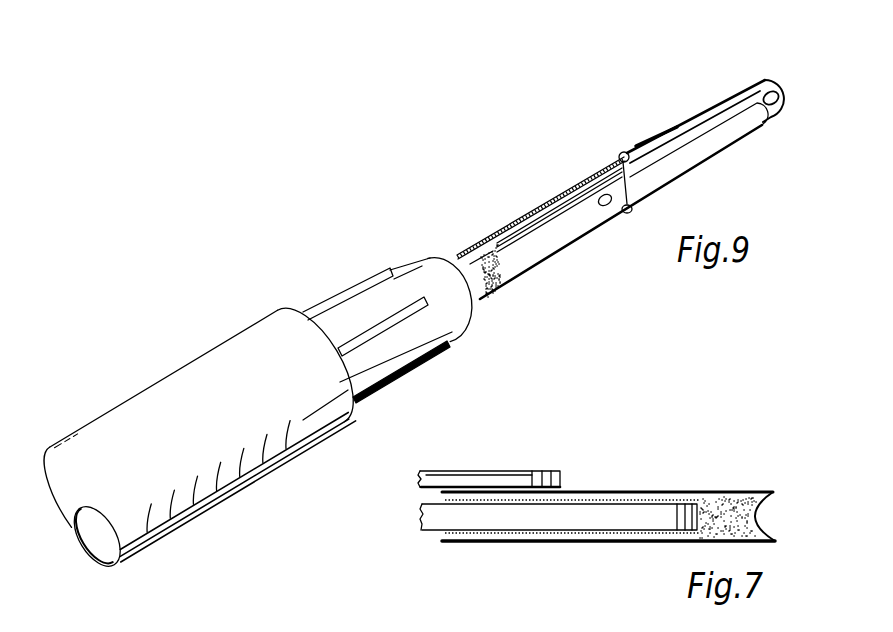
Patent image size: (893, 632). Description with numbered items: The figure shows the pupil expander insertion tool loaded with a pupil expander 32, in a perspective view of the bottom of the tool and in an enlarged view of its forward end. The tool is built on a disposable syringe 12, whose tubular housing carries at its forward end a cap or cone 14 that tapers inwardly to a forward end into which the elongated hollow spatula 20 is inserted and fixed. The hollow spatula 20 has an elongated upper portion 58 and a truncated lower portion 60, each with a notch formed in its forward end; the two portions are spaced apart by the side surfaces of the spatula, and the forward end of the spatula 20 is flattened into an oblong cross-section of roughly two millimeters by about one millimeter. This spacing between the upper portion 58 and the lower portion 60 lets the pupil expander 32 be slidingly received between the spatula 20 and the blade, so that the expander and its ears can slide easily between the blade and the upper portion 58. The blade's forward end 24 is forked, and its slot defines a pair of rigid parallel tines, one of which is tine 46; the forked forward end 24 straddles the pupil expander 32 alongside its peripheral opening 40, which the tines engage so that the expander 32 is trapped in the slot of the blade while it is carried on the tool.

In FIG. 9, the syringe 12 is at (138, 392).
In FIG. 9, the cone 14 is at (425, 258).
In FIG. 9, the hollow spatula 20 is at (520, 217).
In FIG. 9, the upper portion 58 is at (651, 140).
In FIG. 7, the upper portion 58 is at (521, 474).
In FIG. 9, the pupil expander 32 is at (781, 80).
In FIG. 7, the pupil expander 32 is at (760, 510).
In FIG. 9, the truncated lower portion 60 is at (543, 237).
In FIG. 7, the forward end 24 is at (455, 472).
In FIG. 7, the tine 46 is at (641, 517).
In FIG. 7, the peripheral opening 40 is at (724, 460).